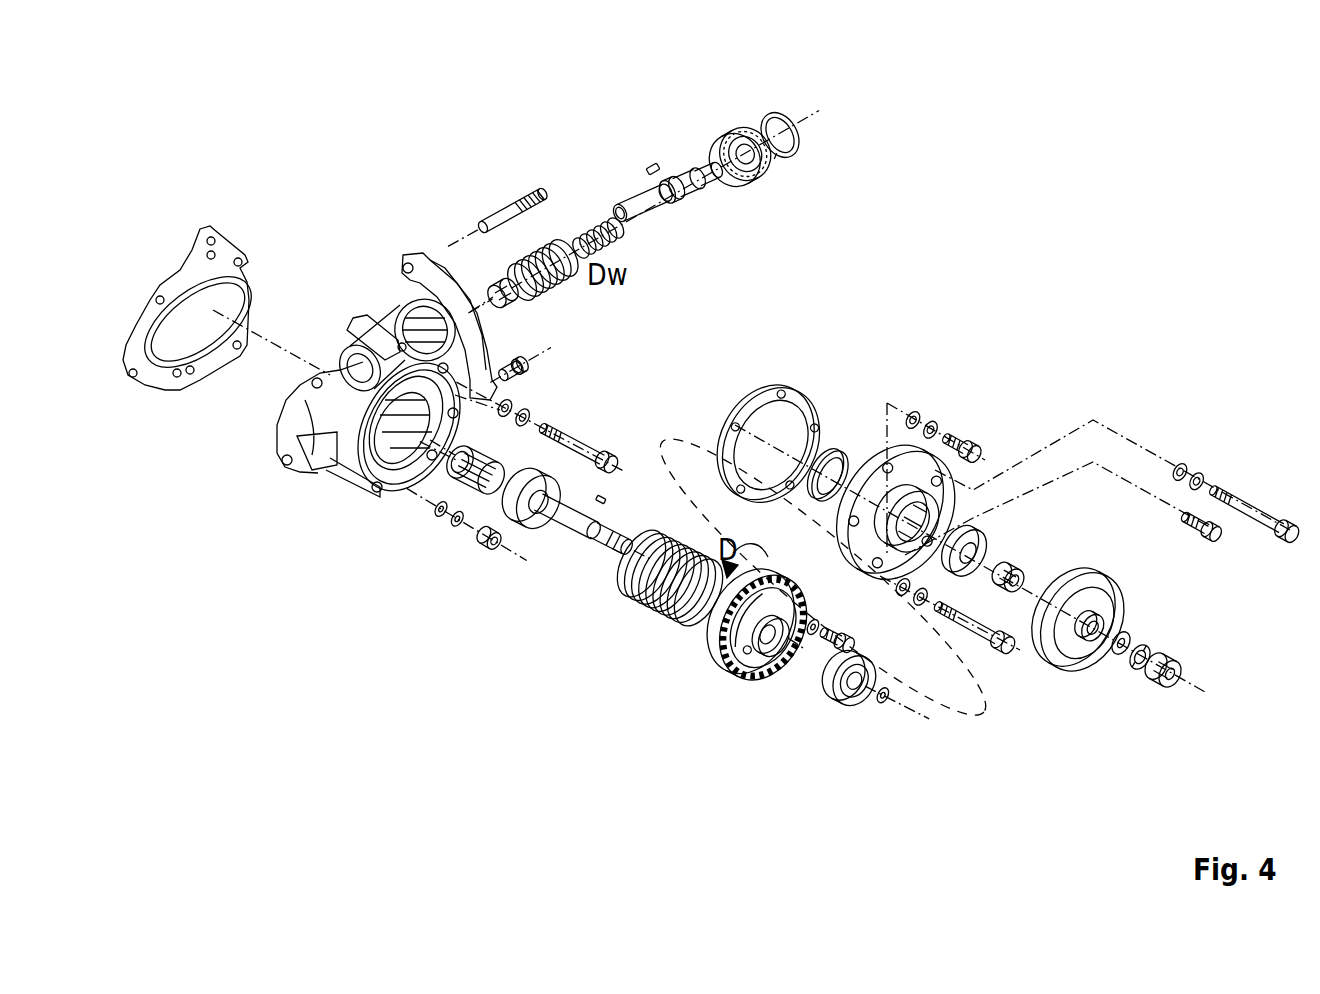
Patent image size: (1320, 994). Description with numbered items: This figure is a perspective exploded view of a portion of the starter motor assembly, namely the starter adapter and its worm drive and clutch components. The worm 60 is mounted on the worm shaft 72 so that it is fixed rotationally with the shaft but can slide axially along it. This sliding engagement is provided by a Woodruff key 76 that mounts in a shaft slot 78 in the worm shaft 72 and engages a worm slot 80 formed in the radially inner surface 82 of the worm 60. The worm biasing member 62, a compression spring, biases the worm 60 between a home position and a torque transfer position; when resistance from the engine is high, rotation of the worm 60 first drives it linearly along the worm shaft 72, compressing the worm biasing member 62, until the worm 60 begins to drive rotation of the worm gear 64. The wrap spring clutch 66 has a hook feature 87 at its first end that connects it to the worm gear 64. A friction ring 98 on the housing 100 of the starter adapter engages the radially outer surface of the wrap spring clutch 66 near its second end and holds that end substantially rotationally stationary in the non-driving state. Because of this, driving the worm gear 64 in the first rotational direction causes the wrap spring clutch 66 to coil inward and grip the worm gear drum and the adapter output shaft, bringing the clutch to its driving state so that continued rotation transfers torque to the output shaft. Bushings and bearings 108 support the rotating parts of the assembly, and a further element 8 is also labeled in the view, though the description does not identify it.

The housing 100 is at (363, 318).
The friction ring 98 is at (355, 437).
The worm biasing member 62 is at (593, 237).
The shaft slot 78 is at (650, 197).
The Woodruff key 76 is at (653, 160).
The worm shaft 72 is at (680, 177).
The bushings and bearings 108 is at (740, 130).
The radially inner surface 82 is at (520, 270).
The worm 60 is at (553, 287).
The worm slot 80 is at (528, 300).
The bolt 8 is at (512, 310).
The wrap spring clutch 66 is at (650, 605).
The hook feature 87 is at (667, 620).
The worm gear 64 is at (718, 668).